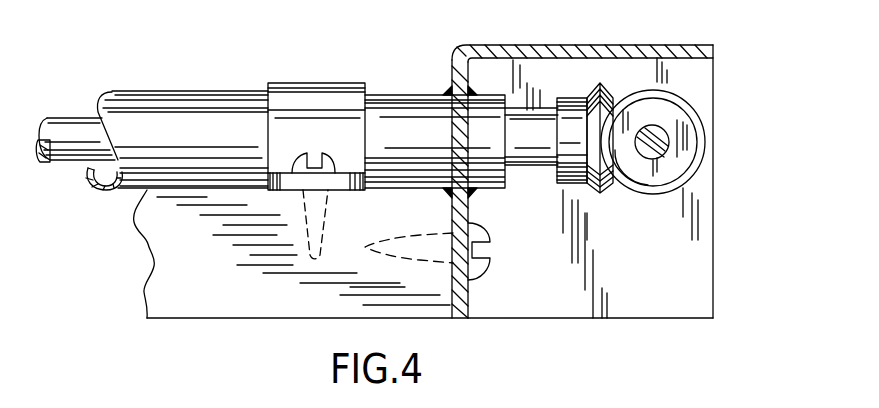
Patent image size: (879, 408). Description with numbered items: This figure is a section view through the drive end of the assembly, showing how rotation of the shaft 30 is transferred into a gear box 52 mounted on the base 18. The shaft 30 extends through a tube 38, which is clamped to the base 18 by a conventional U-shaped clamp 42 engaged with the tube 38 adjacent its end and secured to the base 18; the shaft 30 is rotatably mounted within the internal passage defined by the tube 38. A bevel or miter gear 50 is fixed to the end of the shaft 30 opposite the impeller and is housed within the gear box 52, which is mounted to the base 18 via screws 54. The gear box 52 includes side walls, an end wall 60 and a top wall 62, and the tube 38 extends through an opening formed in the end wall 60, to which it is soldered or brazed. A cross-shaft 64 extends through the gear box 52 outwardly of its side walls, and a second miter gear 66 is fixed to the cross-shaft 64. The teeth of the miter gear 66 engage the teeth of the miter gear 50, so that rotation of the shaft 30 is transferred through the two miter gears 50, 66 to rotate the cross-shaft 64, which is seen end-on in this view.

The base 18 is at (243, 323).
The shaft 30 is at (48, 118).
The tube 38 is at (148, 92).
The U-shaped clamp 42 is at (325, 80).
The miter gear 50 is at (582, 187).
The gear box 52 is at (621, 43).
The screw 54 is at (467, 277).
The end wall 60 is at (467, 298).
The top wall 62 is at (572, 45).
The cross-shaft 64 is at (665, 148).
The miter gear 66 is at (702, 120).